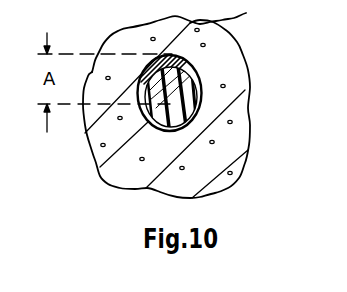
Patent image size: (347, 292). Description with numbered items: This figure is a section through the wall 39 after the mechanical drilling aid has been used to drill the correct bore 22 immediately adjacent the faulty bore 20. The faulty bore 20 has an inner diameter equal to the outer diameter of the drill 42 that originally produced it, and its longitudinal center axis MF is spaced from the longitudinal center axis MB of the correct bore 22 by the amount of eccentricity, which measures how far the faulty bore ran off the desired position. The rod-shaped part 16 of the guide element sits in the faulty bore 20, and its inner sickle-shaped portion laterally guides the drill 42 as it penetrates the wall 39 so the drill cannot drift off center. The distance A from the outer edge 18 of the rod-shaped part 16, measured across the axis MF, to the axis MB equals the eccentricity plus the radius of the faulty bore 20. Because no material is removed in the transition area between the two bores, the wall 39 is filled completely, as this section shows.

The rod-shaped part 16 is at (152, 66).
The outer edge 18 is at (246, 13).
The faulty bore 20 is at (186, 63).
The correct bore 22 is at (148, 120).
The wall 39 is at (243, 162).
The drill 42 is at (228, 121).
The longitudinal center axis of the faulty bore MF is at (172, 73).
The longitudinal center axis of the correct bore MB is at (150, 96).